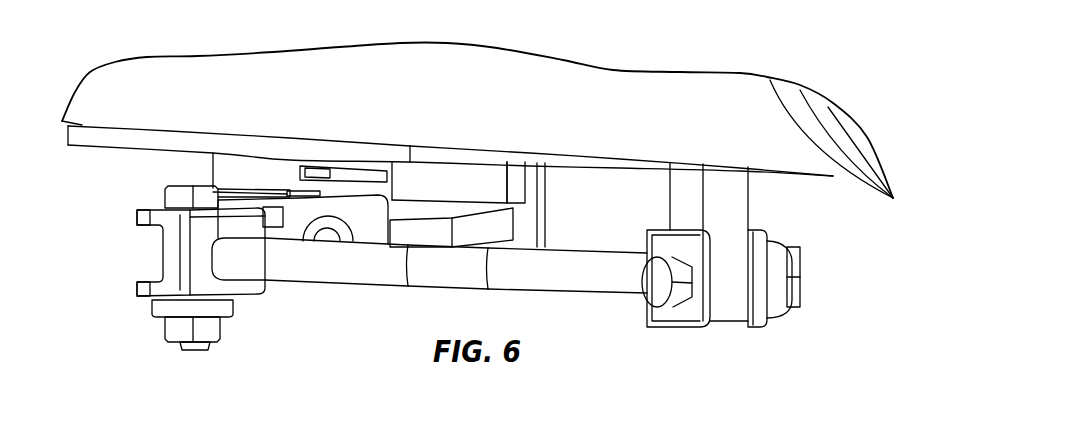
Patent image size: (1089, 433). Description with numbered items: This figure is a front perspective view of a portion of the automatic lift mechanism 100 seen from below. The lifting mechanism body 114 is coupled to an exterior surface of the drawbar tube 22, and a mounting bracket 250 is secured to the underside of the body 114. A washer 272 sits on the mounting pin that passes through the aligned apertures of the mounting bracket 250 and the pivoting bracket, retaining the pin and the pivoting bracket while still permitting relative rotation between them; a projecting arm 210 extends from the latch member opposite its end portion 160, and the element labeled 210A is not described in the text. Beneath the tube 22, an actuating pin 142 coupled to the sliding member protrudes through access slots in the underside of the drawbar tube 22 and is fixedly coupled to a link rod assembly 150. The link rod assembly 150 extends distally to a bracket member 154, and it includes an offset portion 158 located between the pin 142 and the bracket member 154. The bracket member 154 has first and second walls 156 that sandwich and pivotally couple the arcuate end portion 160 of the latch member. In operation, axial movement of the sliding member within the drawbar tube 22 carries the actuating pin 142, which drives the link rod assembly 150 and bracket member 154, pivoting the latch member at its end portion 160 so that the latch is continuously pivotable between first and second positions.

The automatic lift mechanism 100 is at (948, 70).
The drawbar tube 22 is at (690, 97).
The lifting mechanism body 114 is at (93, 141).
The mounting bracket 250 is at (229, 164).
The washer 272 is at (307, 172).
The mounting block 210A is at (305, 168).
The projecting arm 210 is at (540, 178).
The actuating pin 142 is at (730, 200).
The end portion 160 is at (172, 245).
The first and second walls 156 is at (142, 212).
The bracket member 154 is at (255, 285).
The offset portion 158 is at (363, 278).
The link rod assembly 150 is at (580, 284).